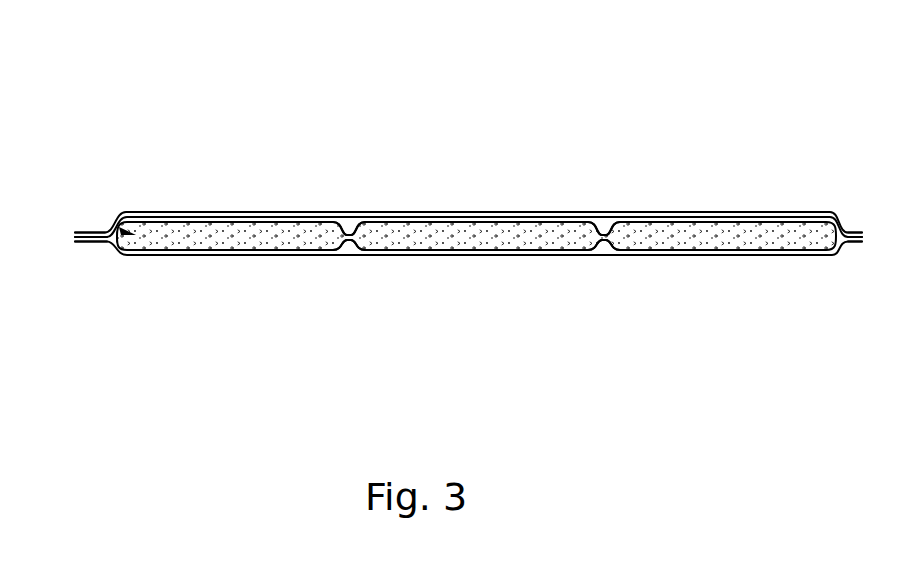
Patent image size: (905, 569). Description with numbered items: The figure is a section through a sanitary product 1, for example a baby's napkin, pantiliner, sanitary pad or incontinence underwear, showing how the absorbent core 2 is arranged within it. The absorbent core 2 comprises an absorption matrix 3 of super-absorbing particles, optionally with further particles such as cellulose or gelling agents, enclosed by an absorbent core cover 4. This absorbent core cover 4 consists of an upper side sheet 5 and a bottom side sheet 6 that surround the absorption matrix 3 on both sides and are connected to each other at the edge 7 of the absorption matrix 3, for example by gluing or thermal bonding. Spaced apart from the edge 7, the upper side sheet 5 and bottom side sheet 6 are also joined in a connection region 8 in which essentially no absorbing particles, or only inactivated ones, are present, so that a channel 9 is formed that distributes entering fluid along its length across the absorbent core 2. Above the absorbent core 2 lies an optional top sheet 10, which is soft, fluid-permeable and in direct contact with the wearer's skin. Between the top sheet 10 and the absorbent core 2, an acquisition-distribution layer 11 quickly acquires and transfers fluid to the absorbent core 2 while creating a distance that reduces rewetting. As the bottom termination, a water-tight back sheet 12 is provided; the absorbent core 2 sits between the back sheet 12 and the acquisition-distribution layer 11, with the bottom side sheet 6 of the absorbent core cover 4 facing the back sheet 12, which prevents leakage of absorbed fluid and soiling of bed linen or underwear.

The sanitary product 1 is at (100, 112).
The absorbent core 2 is at (117, 230).
The absorption matrix 3 is at (477, 250).
The absorbent core cover 4 is at (117, 257).
The upper side sheet 5 is at (360, 222).
The bottom side sheet 6 is at (341, 256).
The edge 7 is at (855, 245).
The connection region 8 is at (348, 222).
The channel 9 is at (604, 228).
The top sheet 10 is at (535, 211).
The acquisition-distribution layer 11 is at (722, 217).
The back sheet 12 is at (210, 258).